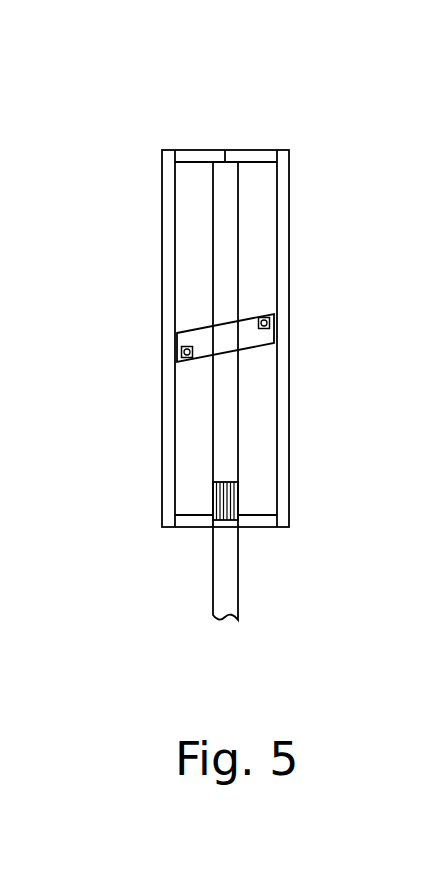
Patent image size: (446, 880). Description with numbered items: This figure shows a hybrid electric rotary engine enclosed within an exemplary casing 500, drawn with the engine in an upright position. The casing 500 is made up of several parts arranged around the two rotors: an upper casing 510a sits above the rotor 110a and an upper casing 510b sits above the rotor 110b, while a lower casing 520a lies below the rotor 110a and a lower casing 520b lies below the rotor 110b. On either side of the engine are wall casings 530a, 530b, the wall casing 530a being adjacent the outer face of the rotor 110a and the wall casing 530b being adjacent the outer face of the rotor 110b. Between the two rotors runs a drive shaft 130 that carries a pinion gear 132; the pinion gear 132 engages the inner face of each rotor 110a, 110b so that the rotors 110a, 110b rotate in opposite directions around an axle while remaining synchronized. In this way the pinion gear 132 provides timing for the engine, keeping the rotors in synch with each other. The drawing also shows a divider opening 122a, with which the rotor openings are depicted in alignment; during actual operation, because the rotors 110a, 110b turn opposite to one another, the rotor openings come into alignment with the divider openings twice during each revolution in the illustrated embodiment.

The casing 500 is at (302, 80).
The upper casing 510a is at (263, 150).
The upper casing 510b is at (197, 150).
The wall casing 530a is at (289, 219).
The wall casing 530b is at (162, 208).
The rotor 110a is at (260, 261).
The rotor 110b is at (190, 270).
The divider opening 122a is at (227, 350).
The pinion gear 132 is at (223, 522).
The drive shaft 130 is at (213, 593).
The lower casing 520a is at (270, 527).
The lower casing 520b is at (188, 527).